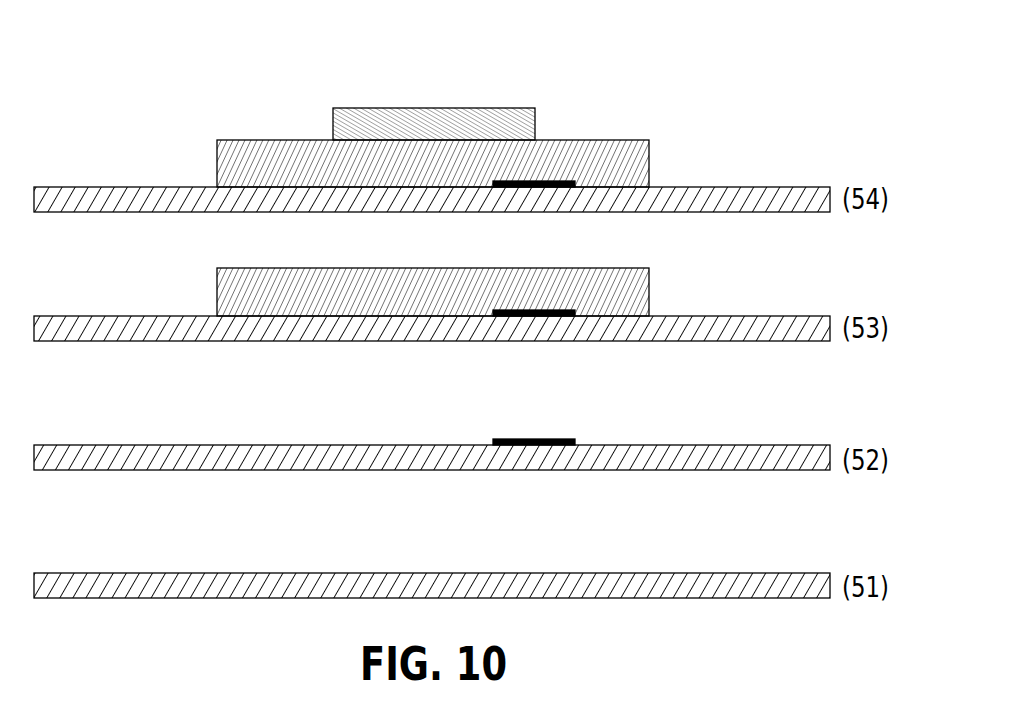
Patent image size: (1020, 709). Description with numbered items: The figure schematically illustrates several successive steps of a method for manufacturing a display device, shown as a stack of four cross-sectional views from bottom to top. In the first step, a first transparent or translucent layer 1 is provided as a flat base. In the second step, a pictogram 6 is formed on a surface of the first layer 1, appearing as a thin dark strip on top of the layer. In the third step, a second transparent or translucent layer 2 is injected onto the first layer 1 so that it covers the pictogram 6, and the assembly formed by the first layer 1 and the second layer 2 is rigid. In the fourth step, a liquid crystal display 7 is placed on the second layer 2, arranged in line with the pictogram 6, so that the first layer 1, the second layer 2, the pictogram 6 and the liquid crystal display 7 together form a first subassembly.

The first transparent or translucent layer 1 is at (158, 587).
The second transparent or translucent layer 2 is at (622, 293).
The pictogram 6 is at (552, 439).
The liquid crystal display 7 is at (503, 130).